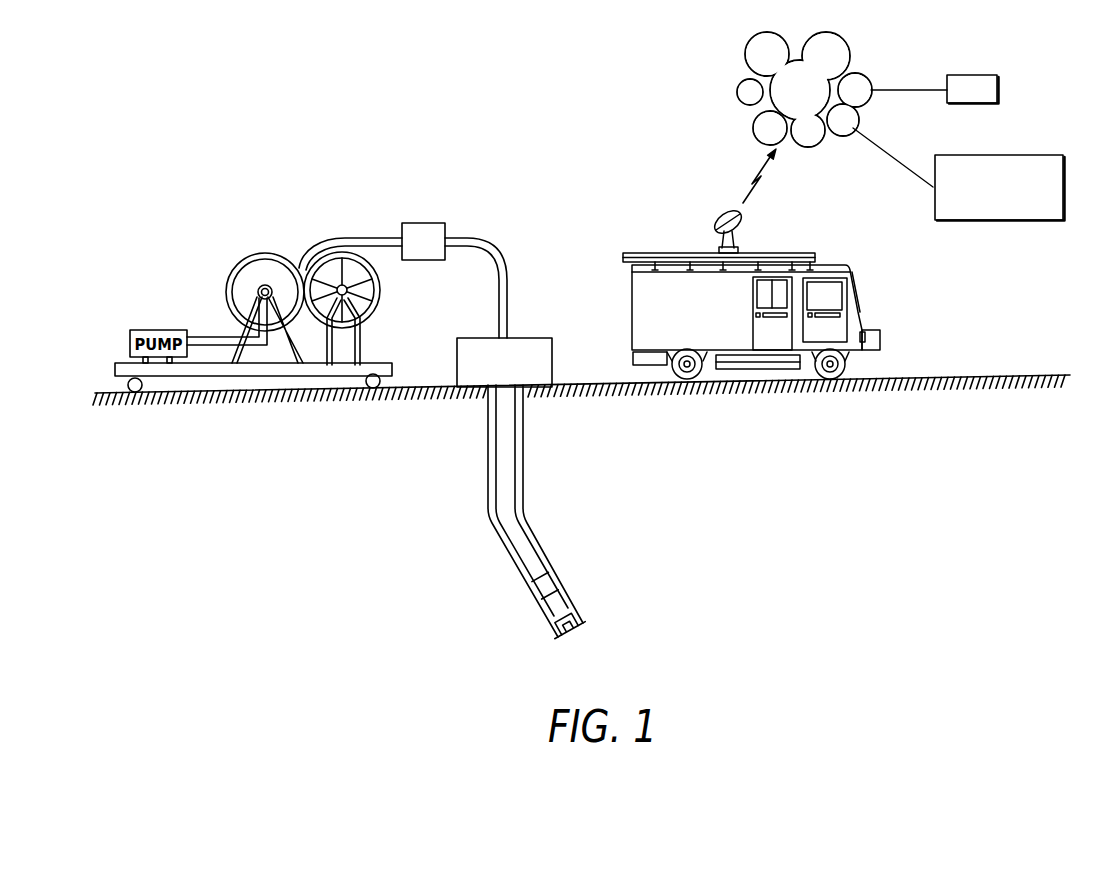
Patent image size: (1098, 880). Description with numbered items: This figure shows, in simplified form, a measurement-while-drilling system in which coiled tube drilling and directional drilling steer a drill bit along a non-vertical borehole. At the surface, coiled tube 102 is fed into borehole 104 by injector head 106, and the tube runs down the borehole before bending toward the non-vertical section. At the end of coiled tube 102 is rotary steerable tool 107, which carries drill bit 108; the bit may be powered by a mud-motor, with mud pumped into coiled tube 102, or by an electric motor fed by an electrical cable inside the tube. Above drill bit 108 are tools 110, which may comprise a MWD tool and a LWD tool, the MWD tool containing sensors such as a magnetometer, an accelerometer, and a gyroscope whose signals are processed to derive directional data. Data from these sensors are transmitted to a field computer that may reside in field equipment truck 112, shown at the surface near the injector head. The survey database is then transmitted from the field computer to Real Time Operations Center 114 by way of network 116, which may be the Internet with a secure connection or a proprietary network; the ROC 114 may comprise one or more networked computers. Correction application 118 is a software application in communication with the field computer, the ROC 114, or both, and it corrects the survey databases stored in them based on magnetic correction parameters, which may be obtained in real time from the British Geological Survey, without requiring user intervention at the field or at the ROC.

The coiled tube 102 is at (369, 238).
The borehole 104 is at (488, 435).
The injector head 106 is at (539, 337).
The rotary steerable tool 107 is at (567, 608).
The drill bit 108 is at (576, 630).
The tools 110 is at (540, 582).
The field equipment truck 112 is at (630, 256).
The Real Time Operations Center (ROC) 114 is at (983, 74).
The network 116 is at (832, 33).
The correction application 118 is at (1048, 154).